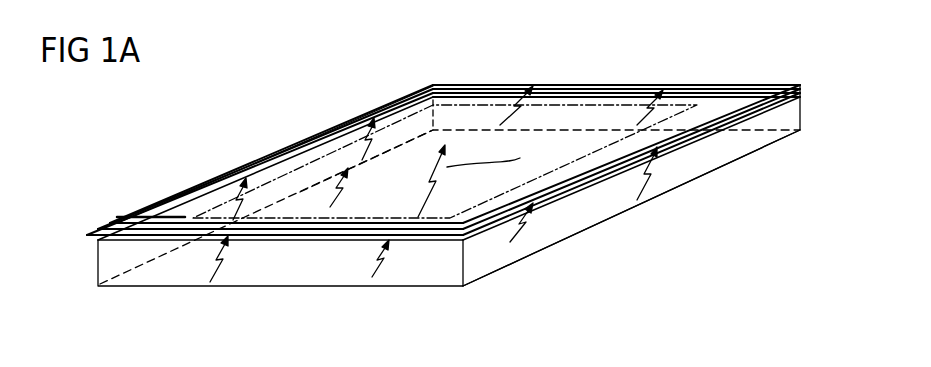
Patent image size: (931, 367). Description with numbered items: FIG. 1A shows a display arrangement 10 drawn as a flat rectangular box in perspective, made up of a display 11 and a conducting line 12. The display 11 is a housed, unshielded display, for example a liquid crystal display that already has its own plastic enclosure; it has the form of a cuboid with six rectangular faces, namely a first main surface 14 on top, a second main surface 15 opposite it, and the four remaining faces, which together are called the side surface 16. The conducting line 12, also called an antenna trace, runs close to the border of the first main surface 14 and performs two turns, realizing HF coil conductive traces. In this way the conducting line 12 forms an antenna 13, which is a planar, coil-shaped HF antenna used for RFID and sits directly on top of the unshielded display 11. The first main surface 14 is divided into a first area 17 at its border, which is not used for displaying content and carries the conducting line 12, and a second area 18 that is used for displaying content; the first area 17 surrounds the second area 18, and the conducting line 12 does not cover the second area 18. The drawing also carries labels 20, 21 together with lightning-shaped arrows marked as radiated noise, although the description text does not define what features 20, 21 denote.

The display arrangement 10 is at (253, 133).
The display 11 is at (98, 262).
The conducting line 12 is at (100, 237).
The antenna 13 is at (85, 173).
The first main surface 14 is at (590, 187).
The second main surface 15 is at (602, 224).
The side surface 16 is at (407, 276).
The first area 17 is at (277, 153).
The second area 18 is at (407, 142).
The right edge 20 is at (544, 208).
The inner region 21 is at (487, 207).